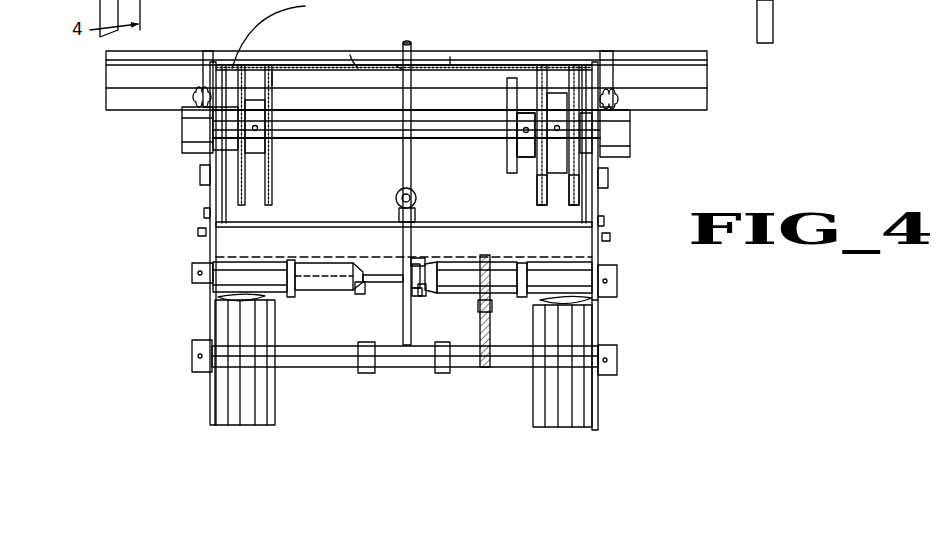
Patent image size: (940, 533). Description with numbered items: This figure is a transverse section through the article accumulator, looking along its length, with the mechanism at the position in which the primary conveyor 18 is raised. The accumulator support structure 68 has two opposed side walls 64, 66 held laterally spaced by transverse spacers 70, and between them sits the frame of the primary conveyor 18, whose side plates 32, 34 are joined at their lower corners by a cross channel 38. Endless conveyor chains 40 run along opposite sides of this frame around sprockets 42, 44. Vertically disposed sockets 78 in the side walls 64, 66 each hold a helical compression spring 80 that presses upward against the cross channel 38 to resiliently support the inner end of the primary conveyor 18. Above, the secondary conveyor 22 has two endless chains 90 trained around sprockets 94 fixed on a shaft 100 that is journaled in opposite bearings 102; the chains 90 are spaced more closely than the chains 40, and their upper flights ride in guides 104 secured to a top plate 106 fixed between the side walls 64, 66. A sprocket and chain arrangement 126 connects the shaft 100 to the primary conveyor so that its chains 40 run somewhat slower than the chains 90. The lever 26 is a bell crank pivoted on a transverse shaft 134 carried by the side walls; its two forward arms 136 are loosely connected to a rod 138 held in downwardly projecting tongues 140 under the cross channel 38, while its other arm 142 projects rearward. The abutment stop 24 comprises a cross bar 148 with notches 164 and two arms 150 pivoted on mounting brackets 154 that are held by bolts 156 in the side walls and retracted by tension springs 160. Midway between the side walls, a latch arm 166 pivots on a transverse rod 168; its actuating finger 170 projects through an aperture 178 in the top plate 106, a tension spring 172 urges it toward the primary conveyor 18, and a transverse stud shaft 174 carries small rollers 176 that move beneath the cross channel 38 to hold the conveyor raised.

The primary conveyor 18 is at (567, 207).
The secondary conveyor 22 is at (533, 200).
The abutment stop 24 is at (709, 98).
The lever 26 is at (478, 312).
The side plate 32 is at (230, 68).
The side plate 34 is at (586, 209).
The cross channel 38 is at (292, 222).
The endless conveyor chains 40 is at (279, 34).
The sprockets 42 is at (236, 186).
The sprockets 44 is at (11, 8).
The side wall 64 is at (210, 310).
The side wall 66 is at (599, 302).
The support structure 68 is at (606, 322).
The transverse spacers 70 is at (100, 10).
The sockets 78 is at (255, 323).
The helical compression spring 80 is at (262, 297).
The endless chains 90 is at (272, 200).
The sprockets 94 is at (273, 78).
The shaft 100 is at (300, 128).
The bearings 102 is at (190, 142).
The guides 104 is at (292, 55).
The top plate 106 is at (355, 68).
The sprocket and chain arrangement 126 is at (508, 148).
The transverse shaft 134 is at (193, 275).
The arms 136 is at (290, 262).
The rod 138 is at (375, 280).
The tongues 140 is at (308, 262).
The arm 142 is at (480, 333).
The cross bar 148 is at (450, 57).
The arms 150 is at (203, 72).
The mounting brackets 154 is at (208, 214).
The bolts 156 is at (200, 233).
The tension springs 160 is at (196, 97).
The notches 164 is at (276, 98).
The arm 166 is at (402, 220).
The transverse rod 168 is at (320, 357).
The actuating finger 170 is at (411, 44).
The tension spring 172 is at (416, 200).
The transverse stud shaft 174 is at (420, 275).
The rollers 176 is at (413, 270).
The aperture 178 is at (400, 70).